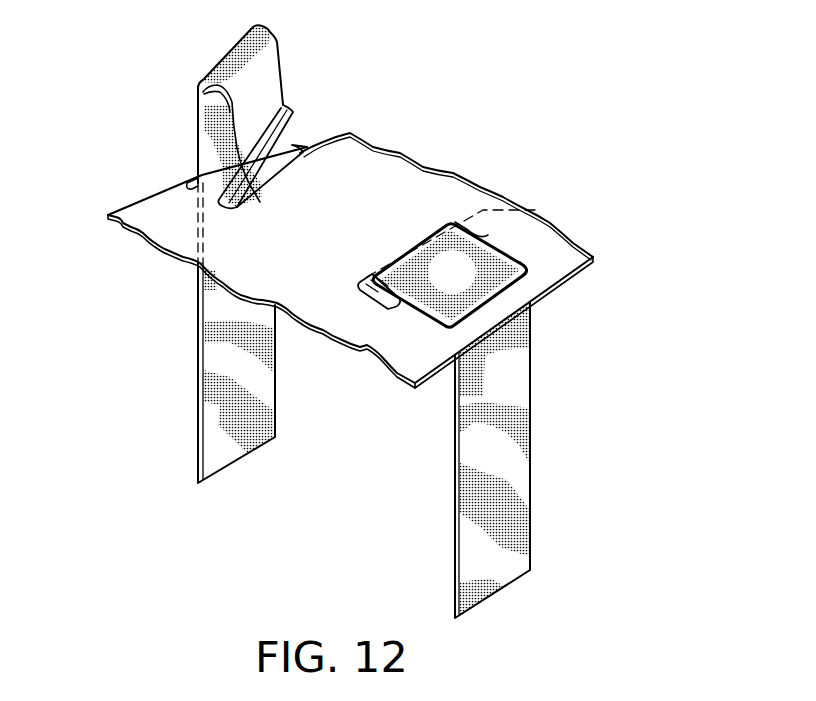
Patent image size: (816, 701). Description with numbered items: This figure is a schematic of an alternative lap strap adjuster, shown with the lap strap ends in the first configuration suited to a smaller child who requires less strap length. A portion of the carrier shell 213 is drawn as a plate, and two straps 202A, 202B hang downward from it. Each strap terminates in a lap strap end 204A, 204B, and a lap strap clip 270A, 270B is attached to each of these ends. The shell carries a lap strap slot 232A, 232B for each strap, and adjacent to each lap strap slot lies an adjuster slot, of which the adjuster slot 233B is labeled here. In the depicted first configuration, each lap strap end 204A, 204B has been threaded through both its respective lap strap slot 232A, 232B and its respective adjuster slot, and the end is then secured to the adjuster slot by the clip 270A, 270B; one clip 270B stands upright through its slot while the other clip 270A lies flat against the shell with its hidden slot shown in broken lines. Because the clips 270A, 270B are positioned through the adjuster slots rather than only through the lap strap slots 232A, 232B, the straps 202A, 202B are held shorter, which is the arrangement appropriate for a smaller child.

The strap 202A is at (520, 472).
The strap 202B is at (220, 358).
The lap strap end 204A is at (513, 257).
The lap strap end 204B is at (270, 88).
The plate 213 is at (507, 196).
The lap strap slot 232A is at (523, 268).
The lap strap slot 232B is at (196, 165).
The adjuster slot 233B is at (420, 203).
The lap strap clip 270A is at (540, 210).
The lap strap clip 270B is at (283, 93).